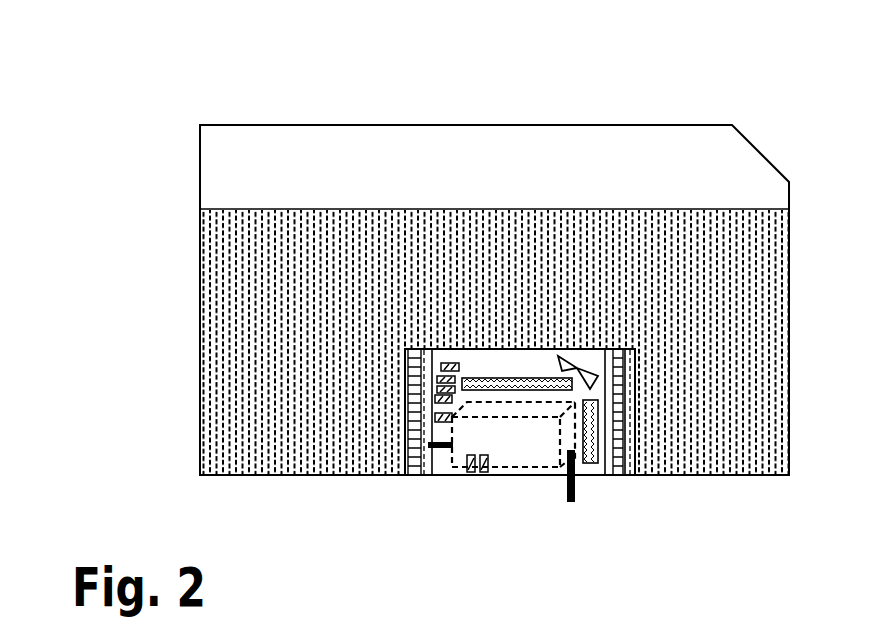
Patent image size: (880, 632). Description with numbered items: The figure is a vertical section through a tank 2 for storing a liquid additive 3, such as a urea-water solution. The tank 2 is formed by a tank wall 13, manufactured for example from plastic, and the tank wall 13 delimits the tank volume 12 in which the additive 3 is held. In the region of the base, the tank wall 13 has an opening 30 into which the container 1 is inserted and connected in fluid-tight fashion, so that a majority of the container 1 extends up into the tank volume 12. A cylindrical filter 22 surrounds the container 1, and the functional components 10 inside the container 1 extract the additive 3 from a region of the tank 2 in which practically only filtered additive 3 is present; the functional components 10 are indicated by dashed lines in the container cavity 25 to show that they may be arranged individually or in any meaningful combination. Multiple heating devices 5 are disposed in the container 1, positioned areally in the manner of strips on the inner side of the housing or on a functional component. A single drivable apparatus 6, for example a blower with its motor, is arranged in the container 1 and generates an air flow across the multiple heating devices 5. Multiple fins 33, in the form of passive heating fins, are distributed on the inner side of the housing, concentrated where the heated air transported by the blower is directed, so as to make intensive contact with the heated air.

The container 1 is at (468, 347).
The tank 2 is at (184, 282).
The liquid additive 3 is at (275, 235).
The heating device 5 is at (523, 378).
The drivable apparatus 6 is at (600, 372).
The functional components 10 is at (510, 470).
The tank volume 12 is at (367, 158).
The tank wall 13 is at (645, 122).
The filter 22 is at (417, 424).
The container cavity 25 is at (547, 358).
The opening 30 is at (463, 494).
The fins 33 is at (440, 395).